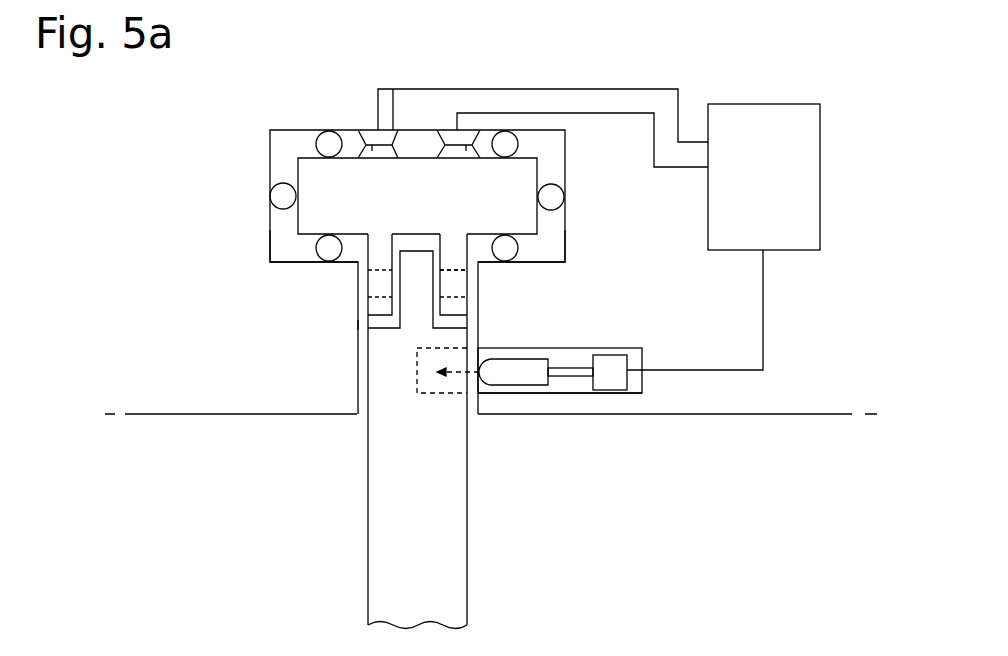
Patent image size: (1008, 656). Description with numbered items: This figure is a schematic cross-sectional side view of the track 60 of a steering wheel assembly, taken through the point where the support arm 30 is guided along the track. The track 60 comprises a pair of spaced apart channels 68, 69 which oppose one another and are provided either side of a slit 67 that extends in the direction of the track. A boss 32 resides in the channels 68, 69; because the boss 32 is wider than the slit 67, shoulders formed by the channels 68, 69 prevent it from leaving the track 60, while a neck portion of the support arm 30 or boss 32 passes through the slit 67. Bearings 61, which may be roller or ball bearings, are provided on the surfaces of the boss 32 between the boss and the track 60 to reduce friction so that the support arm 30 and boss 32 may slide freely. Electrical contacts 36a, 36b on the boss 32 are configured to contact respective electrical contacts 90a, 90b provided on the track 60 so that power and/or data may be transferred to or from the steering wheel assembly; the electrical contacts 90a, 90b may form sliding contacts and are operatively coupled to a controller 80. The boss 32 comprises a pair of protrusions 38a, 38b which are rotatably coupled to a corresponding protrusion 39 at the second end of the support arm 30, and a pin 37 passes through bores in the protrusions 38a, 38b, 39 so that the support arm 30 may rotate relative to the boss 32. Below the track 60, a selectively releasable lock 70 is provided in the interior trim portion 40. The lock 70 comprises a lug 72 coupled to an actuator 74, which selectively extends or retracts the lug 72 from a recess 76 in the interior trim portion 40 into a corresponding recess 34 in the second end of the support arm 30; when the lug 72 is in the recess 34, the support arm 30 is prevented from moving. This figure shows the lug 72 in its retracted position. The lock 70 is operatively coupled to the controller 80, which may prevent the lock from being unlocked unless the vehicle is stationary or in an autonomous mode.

The support arm 30 is at (445, 572).
The boss 32 is at (305, 168).
The recess 34 is at (437, 393).
The electrical contact 36a is at (372, 150).
The electrical contact 36b is at (467, 147).
The pin 37 is at (438, 283).
The protrusion 38a is at (380, 307).
The protrusion 38b is at (462, 307).
The protrusion 39 is at (415, 318).
The interior trim portion 40 is at (207, 403).
The track 60 is at (300, 138).
The bearings 61 is at (328, 140).
The slit 67 is at (370, 325).
The channel 68 is at (277, 232).
The channel 69 is at (558, 232).
The selectively releasable lock 70 is at (580, 404).
The lug 72 is at (508, 377).
The actuator 74 is at (627, 380).
The recess 76 is at (613, 393).
The controller 80 is at (798, 178).
The electrical contact 90a is at (386, 95).
The electrical contact 90b is at (443, 128).